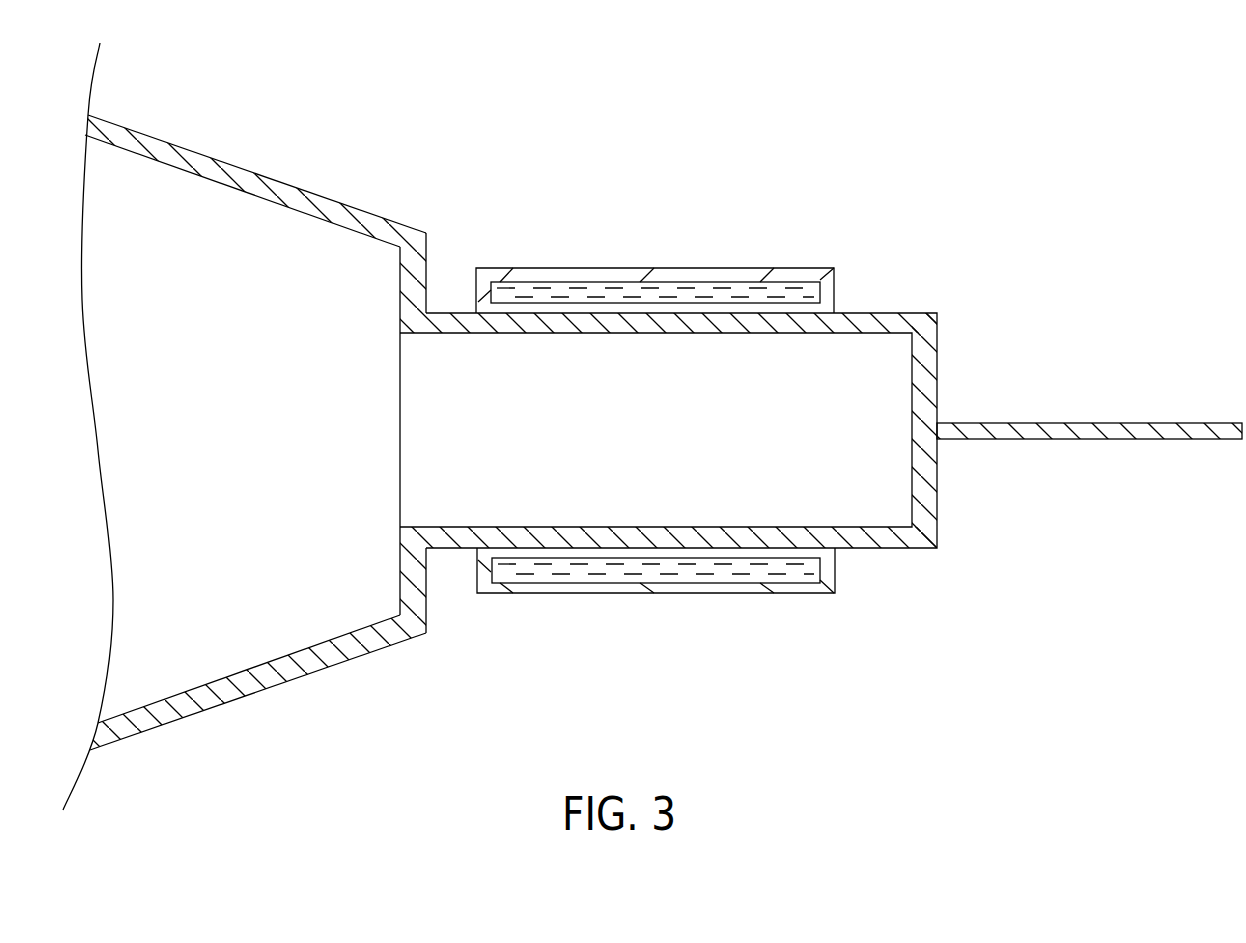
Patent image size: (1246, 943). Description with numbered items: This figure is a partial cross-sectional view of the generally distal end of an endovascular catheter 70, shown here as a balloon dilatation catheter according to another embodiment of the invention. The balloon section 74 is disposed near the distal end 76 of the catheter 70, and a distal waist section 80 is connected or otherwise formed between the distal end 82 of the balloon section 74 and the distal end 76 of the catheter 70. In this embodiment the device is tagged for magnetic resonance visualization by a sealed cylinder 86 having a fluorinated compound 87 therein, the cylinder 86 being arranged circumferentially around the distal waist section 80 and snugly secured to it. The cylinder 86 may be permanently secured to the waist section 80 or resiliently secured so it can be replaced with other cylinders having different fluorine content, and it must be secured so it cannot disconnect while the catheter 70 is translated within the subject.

The endovascular catheter 70 is at (428, 93).
The balloon section 74 is at (208, 202).
The distal end 76 is at (1010, 442).
The distal waist section 80 is at (895, 538).
The distal end of the balloon section 82 is at (400, 353).
The sealed cylinder 86 is at (655, 280).
The fluorinated compound 87 is at (764, 295).